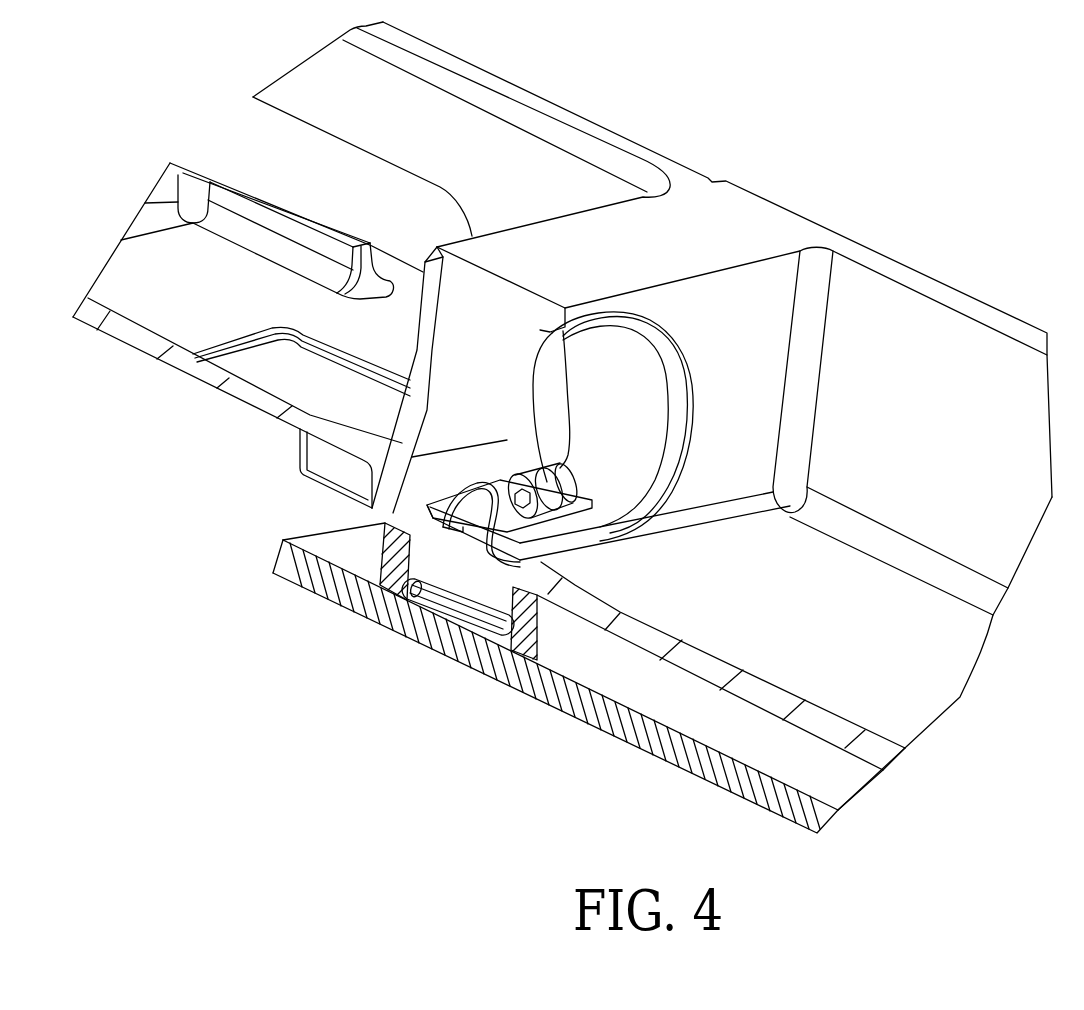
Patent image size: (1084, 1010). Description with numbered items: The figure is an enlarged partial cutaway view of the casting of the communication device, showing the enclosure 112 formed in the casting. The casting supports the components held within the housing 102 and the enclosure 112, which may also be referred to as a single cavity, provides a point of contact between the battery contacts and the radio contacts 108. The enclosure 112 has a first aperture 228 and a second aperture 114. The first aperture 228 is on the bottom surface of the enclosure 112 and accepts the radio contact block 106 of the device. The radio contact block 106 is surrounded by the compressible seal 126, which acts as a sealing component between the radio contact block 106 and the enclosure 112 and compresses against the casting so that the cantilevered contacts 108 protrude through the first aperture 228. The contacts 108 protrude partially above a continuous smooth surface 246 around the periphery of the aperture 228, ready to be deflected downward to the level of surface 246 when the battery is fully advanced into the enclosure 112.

The housing 102 is at (953, 660).
The radio contact block 106 is at (470, 577).
The radio contacts 108 is at (568, 485).
The enclosure 112 is at (730, 293).
The second aperture 114 is at (637, 427).
The compressible seal 126 is at (393, 577).
The first aperture 228 is at (440, 493).
The continuous smooth surface 246 is at (560, 523).